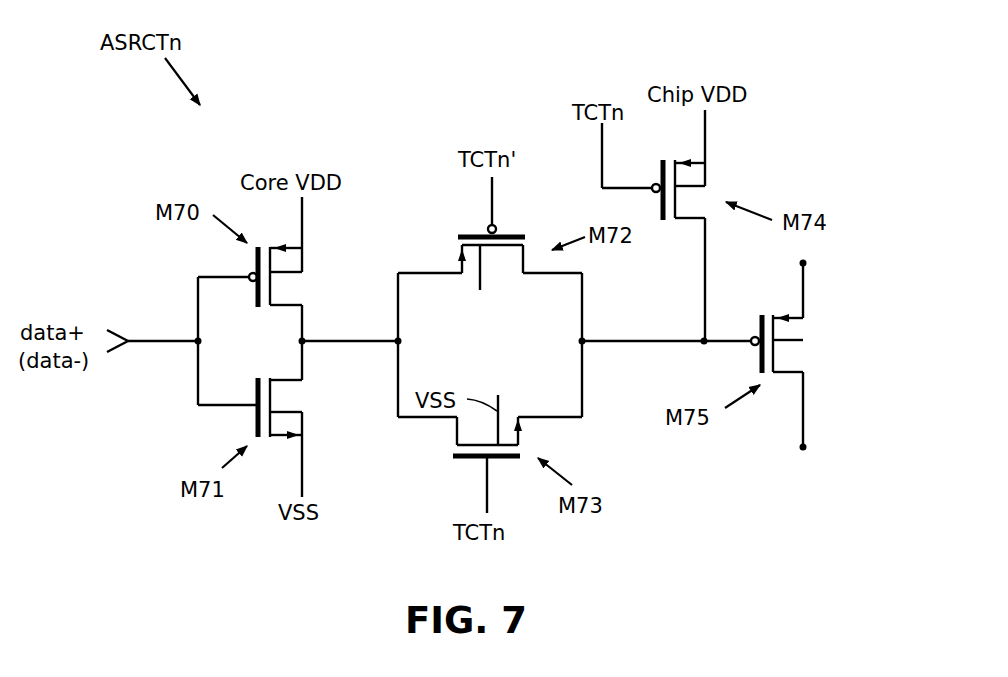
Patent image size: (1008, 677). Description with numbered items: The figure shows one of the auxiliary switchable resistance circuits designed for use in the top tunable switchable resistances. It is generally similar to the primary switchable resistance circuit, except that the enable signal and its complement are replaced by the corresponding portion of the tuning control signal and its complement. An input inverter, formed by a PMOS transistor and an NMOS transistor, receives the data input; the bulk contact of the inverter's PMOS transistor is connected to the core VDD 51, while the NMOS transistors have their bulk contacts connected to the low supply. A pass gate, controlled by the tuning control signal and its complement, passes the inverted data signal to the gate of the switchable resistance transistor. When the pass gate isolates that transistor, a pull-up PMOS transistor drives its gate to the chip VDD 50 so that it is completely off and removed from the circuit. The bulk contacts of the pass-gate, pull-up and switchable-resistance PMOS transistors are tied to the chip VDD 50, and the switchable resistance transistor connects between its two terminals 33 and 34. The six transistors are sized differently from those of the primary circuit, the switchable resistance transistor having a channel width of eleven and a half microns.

The first terminal of pass transistor M75 33 is at (805, 278).
The second terminal of pass transistor M75 34 is at (805, 405).
The chip VDD 50 is at (480, 283).
The core VDD 51 is at (303, 205).